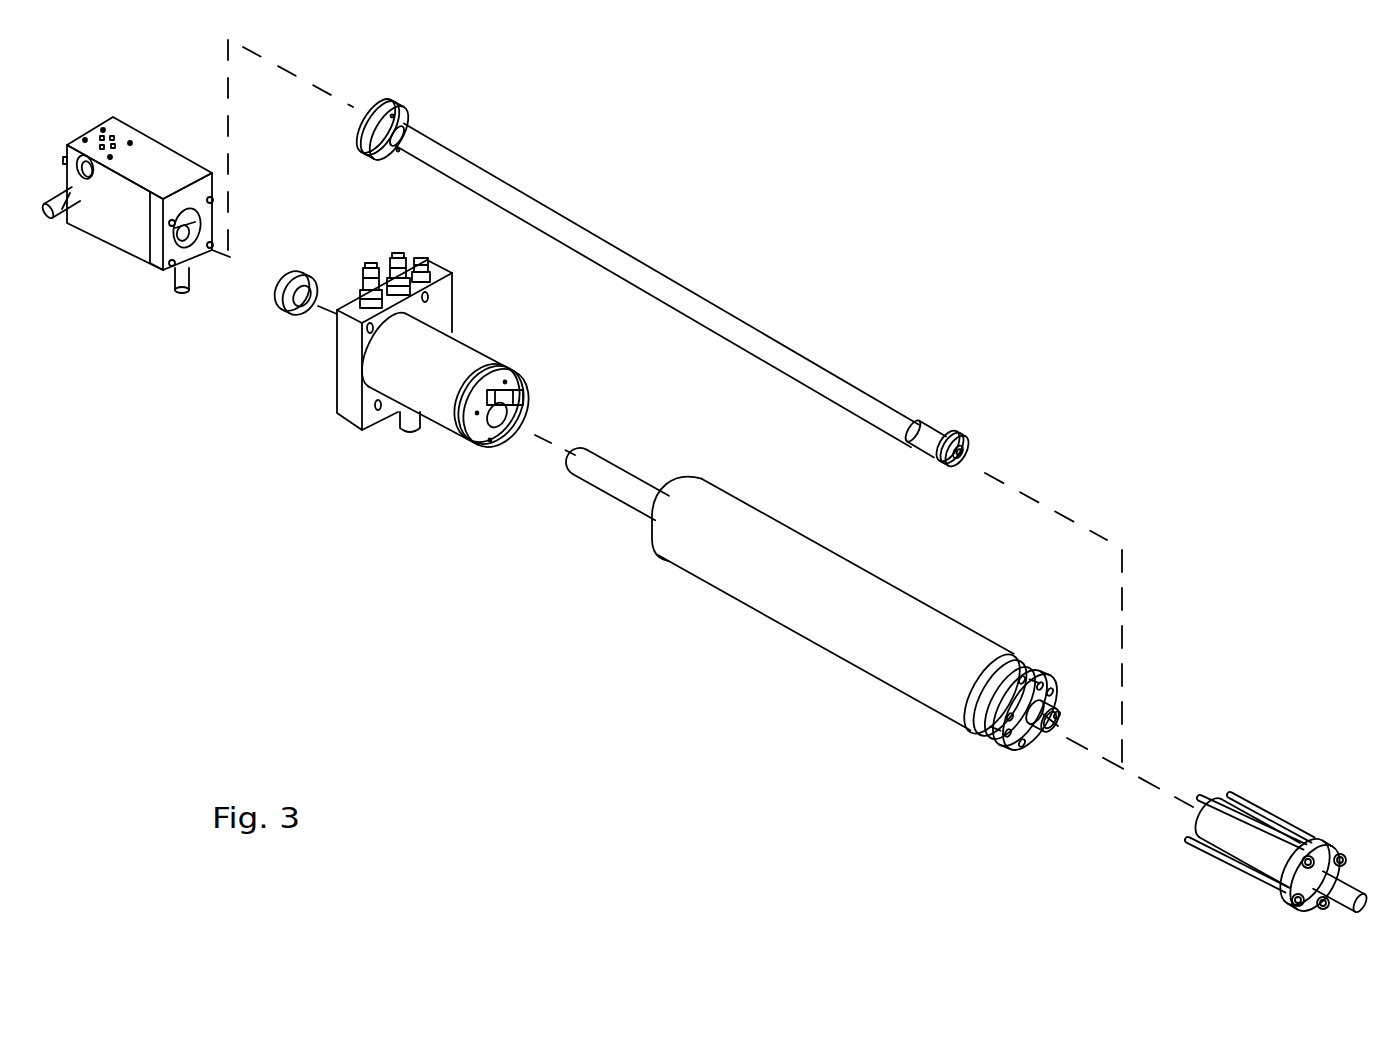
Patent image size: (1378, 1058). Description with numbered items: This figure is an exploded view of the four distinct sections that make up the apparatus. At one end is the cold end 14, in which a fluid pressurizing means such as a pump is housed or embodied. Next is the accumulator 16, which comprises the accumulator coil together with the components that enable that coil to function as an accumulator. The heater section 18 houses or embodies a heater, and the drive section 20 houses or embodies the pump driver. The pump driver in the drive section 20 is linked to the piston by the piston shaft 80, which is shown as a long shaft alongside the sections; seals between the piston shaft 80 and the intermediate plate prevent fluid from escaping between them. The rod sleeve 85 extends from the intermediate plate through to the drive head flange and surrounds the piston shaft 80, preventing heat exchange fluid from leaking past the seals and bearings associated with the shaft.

The cold end 14 is at (1273, 803).
The accumulator 16 is at (797, 685).
The heater section 18 is at (427, 448).
The drive section 20 is at (118, 270).
The piston shaft 80 is at (697, 250).
The rod sleeve 85 is at (608, 477).